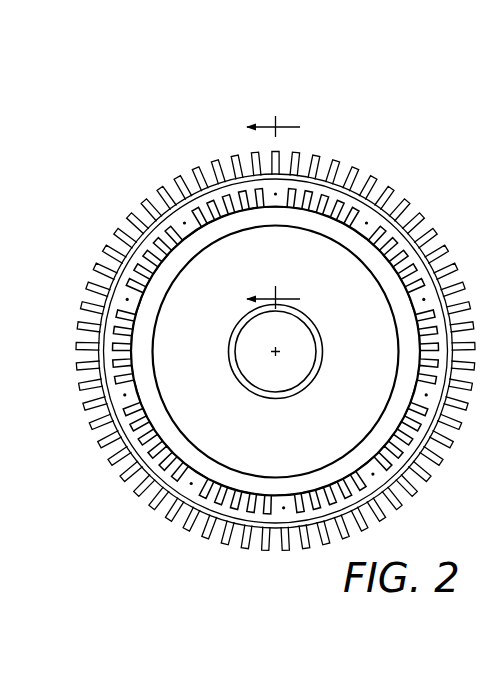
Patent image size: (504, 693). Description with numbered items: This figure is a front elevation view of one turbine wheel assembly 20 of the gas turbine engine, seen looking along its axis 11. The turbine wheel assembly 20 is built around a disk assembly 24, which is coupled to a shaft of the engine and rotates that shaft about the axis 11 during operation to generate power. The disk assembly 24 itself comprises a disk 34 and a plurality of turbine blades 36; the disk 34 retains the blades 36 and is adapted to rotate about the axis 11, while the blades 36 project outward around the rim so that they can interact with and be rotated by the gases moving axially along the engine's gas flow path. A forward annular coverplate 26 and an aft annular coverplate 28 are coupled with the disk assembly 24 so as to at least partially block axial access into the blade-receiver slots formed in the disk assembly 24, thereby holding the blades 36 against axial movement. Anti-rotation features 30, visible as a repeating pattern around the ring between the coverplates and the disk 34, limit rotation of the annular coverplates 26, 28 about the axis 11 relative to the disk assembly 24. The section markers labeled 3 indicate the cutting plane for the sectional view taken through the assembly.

The axis 11 is at (278, 351).
The turbine wheel assembly 20 is at (184, 136).
The disk assembly 24 is at (35, 118).
The forward annular coverplate 26 is at (434, 253).
The aft annular coverplate 28 is at (418, 204).
The anti-rotation features 30 is at (291, 190).
The disk 34 is at (204, 283).
The turbine blades 36 is at (74, 298).
The section line 3- 3 is at (281, 213).